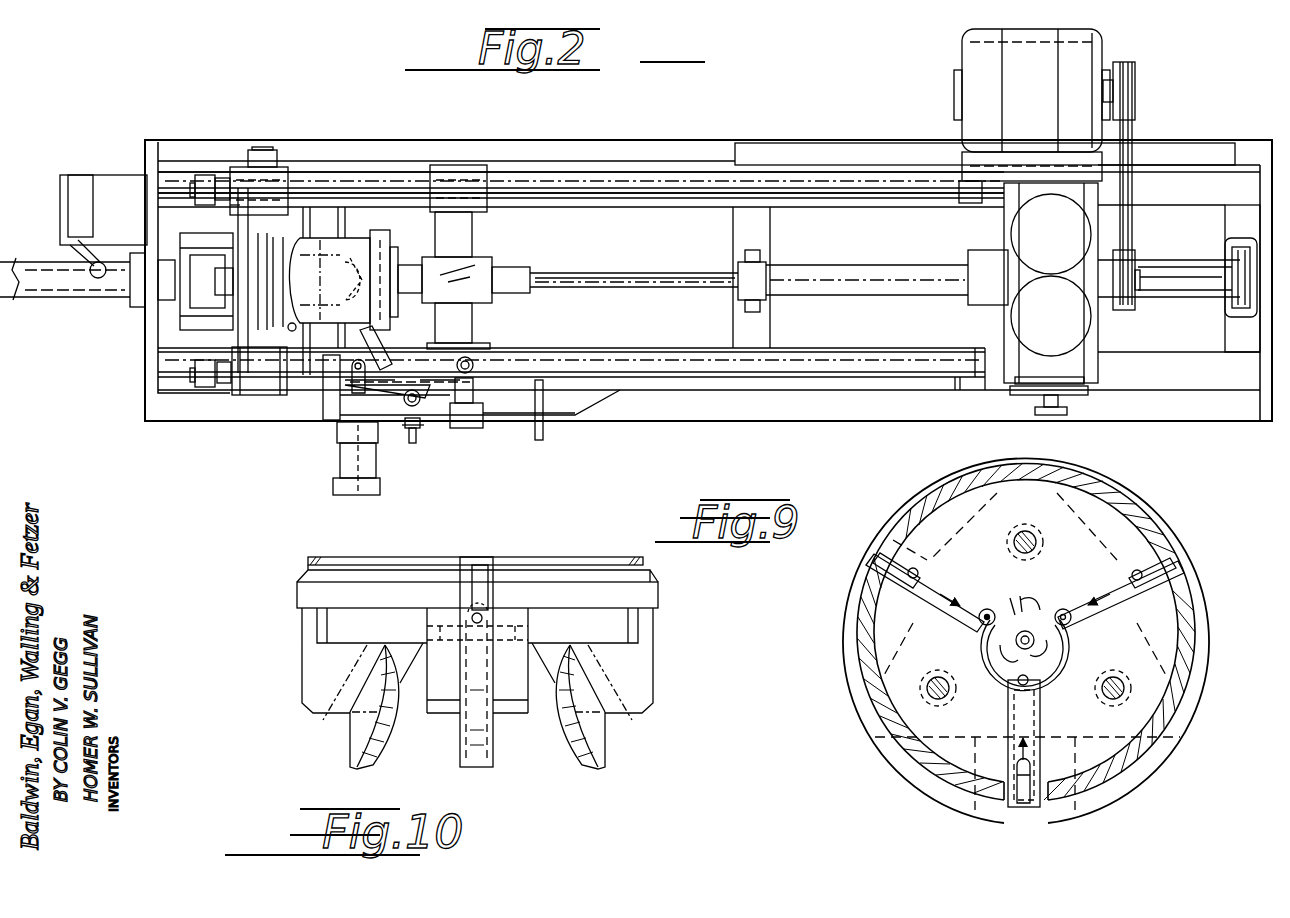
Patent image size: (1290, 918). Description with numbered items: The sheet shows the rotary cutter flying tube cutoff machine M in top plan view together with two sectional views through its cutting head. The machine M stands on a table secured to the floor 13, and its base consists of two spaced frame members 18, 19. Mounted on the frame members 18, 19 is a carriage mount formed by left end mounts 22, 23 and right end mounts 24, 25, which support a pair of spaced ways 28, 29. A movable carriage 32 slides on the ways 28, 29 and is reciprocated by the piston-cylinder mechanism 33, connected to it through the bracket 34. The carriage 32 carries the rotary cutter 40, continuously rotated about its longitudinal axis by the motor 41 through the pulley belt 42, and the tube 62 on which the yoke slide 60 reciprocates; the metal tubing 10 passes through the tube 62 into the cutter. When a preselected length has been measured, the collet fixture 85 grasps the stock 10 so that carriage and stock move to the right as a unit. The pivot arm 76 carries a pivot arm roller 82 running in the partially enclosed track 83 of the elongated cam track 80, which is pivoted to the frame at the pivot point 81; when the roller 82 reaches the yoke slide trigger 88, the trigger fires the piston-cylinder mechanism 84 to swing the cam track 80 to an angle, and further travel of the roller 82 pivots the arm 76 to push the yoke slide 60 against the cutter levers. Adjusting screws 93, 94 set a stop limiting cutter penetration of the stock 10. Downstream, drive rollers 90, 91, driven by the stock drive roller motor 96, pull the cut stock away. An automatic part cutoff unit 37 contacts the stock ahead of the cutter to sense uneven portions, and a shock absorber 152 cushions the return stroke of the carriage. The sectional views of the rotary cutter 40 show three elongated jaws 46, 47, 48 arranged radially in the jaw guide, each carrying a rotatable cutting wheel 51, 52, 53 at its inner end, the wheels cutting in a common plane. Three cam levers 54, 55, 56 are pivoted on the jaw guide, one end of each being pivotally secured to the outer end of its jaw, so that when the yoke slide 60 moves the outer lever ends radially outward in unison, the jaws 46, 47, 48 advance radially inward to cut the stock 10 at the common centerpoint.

In FIG. 2, the floor 13 is at (682, 425).
In FIG. 2, the frame member 19 is at (1218, 378).
In FIG. 2, the frame member 18 is at (535, 170).
In FIG. 2, the way 29 is at (625, 190).
In FIG. 2, the rotary cutter flying tube cutoff machine M is at (217, 150).
In FIG. 2, the automatic part cutoff unit 37 is at (77, 176).
In FIG. 2, the buffer or shock absorber 152 is at (63, 288).
In FIG. 2, the collet fixture 85 is at (185, 302).
In FIG. 2, the left end mount 23 is at (205, 178).
In FIG. 2, the bracket 34 is at (240, 206).
In FIG. 2, the rotary cutter 40 is at (288, 212).
In FIG. 9, the rotary cutter 40 is at (845, 665).
In FIG. 10, the rotary cutter 40 is at (306, 597).
In FIG. 2, the pulley belt 42 is at (262, 340).
In FIG. 2, the left end mount 22 is at (200, 390).
In FIG. 2, the way 28 is at (225, 390).
In FIG. 2, the yoke slide 60 is at (362, 240).
In FIG. 2, the motor 41 is at (388, 238).
In FIG. 2, the tube 62 is at (530, 290).
In FIG. 2, the movable carriage 32 is at (468, 235).
In FIG. 2, the piston-cylinder mechanism 33 is at (810, 270).
In FIG. 2, the stock drive roller motor 96 is at (1090, 55).
In FIG. 2, the right end mount 25 is at (968, 185).
In FIG. 2, the drive roller 90 is at (1065, 235).
In FIG. 2, the drive roller 91 is at (1080, 325).
In FIG. 2, the track 83 is at (624, 352).
In FIG. 2, the cam track 80 is at (863, 352).
In FIG. 2, the right end mount 24 is at (960, 390).
In FIG. 2, the pivot arm 76 is at (360, 355).
In FIG. 2, the pivot arm roller 82 is at (395, 358).
In FIG. 2, the pivot point 81 is at (473, 366).
In FIG. 2, the adjusting screw 93 is at (428, 405).
In FIG. 2, the yoke slide trigger 88 is at (478, 382).
In FIG. 2, the adjusting screw 94 is at (412, 443).
In FIG. 2, the piston-cylinder mechanism 84 is at (350, 463).
In FIG. 9, the rotatable cutting wheel 52 is at (1012, 670).
In FIG. 9, the rotatable cutting wheel 51 is at (1062, 655).
In FIG. 9, the metal pipe or tubing 10 is at (1012, 643).
In FIG. 9, the cam lever 54 is at (880, 560).
In FIG. 10, the cam lever 54 is at (355, 740).
In FIG. 9, the cam lever 56 is at (1165, 562).
In FIG. 10, the cam lever 56 is at (595, 740).
In FIG. 9, the jaw 48 is at (985, 617).
In FIG. 9, the jaw 46 is at (1070, 617).
In FIG. 9, the rotatable cutting wheel 53 is at (1012, 600).
In FIG. 9, the jaw 47 is at (1044, 718).
In FIG. 10, the jaw 47 is at (500, 568).
In FIG. 9, the cam lever 55 is at (1028, 812).
In FIG. 10, the cam lever 55 is at (490, 762).